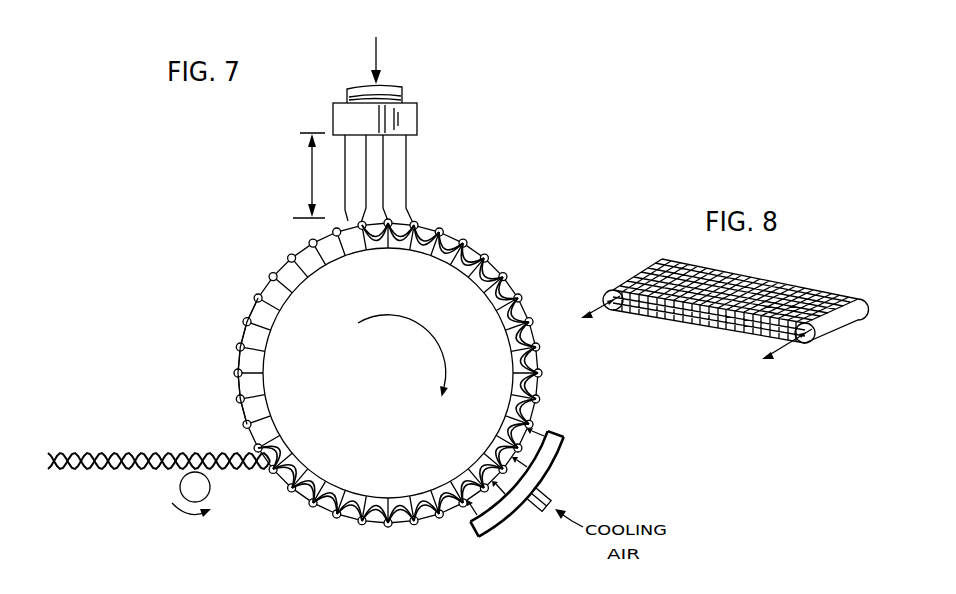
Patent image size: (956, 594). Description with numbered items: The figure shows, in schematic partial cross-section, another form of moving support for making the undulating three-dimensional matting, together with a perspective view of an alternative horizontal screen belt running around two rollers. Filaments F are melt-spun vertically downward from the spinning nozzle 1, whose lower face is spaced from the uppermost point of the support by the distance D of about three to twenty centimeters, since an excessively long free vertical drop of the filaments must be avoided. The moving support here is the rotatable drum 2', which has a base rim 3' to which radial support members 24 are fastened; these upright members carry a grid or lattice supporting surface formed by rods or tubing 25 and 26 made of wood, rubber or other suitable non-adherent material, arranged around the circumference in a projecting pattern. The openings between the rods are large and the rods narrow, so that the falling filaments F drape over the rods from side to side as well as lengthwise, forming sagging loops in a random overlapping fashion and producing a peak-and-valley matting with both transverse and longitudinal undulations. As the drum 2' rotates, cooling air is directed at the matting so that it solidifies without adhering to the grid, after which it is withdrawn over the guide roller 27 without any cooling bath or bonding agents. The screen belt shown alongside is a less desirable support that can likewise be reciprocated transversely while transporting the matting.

The spinning nozzle 1 is at (413, 115).
The filaments F is at (383, 158).
The distance D is at (302, 175).
The drum 2' is at (348, 364).
The rim 3' is at (387, 373).
The radial support members 24 is at (262, 291).
The rods or tubing 25 is at (240, 414).
The rods or tubing 26 is at (240, 347).
The guide roller 27 is at (183, 490).